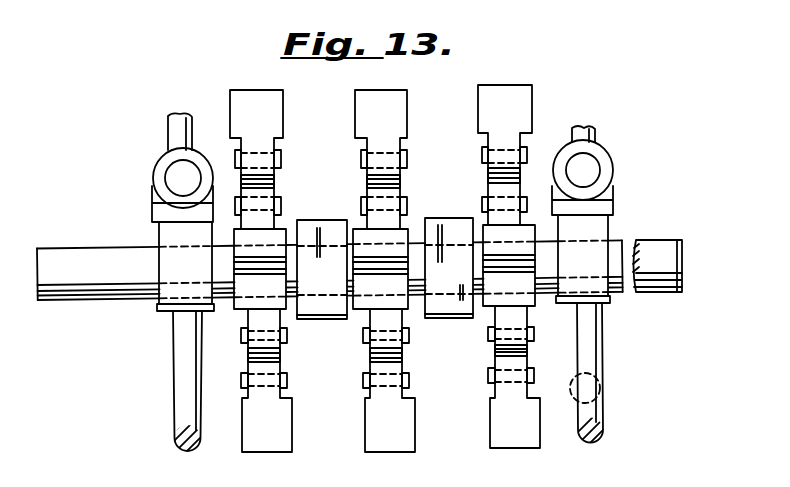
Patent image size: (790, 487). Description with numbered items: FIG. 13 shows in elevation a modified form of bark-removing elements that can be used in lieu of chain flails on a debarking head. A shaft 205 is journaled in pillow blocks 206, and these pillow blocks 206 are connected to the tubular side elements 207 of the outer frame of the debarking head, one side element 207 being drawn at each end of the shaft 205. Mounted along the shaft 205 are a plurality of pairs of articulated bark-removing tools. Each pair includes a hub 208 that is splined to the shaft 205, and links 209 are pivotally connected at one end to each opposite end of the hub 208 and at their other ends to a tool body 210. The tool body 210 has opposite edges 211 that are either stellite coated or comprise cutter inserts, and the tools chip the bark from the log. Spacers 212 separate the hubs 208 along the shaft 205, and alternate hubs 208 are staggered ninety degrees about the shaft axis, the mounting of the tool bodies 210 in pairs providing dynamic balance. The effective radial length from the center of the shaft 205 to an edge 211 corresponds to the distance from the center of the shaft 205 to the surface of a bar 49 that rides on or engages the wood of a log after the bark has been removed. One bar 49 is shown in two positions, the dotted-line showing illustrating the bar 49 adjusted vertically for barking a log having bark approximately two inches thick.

The bar 49 is at (173, 402).
The shaft 205 is at (660, 246).
The pillow blocks 206 is at (172, 234).
The side elements 207 is at (154, 179).
The hub 208 is at (372, 302).
The links 209 is at (355, 183).
The tool body 210 is at (317, 227).
The edges 211 is at (307, 323).
The spacers 212 is at (292, 277).